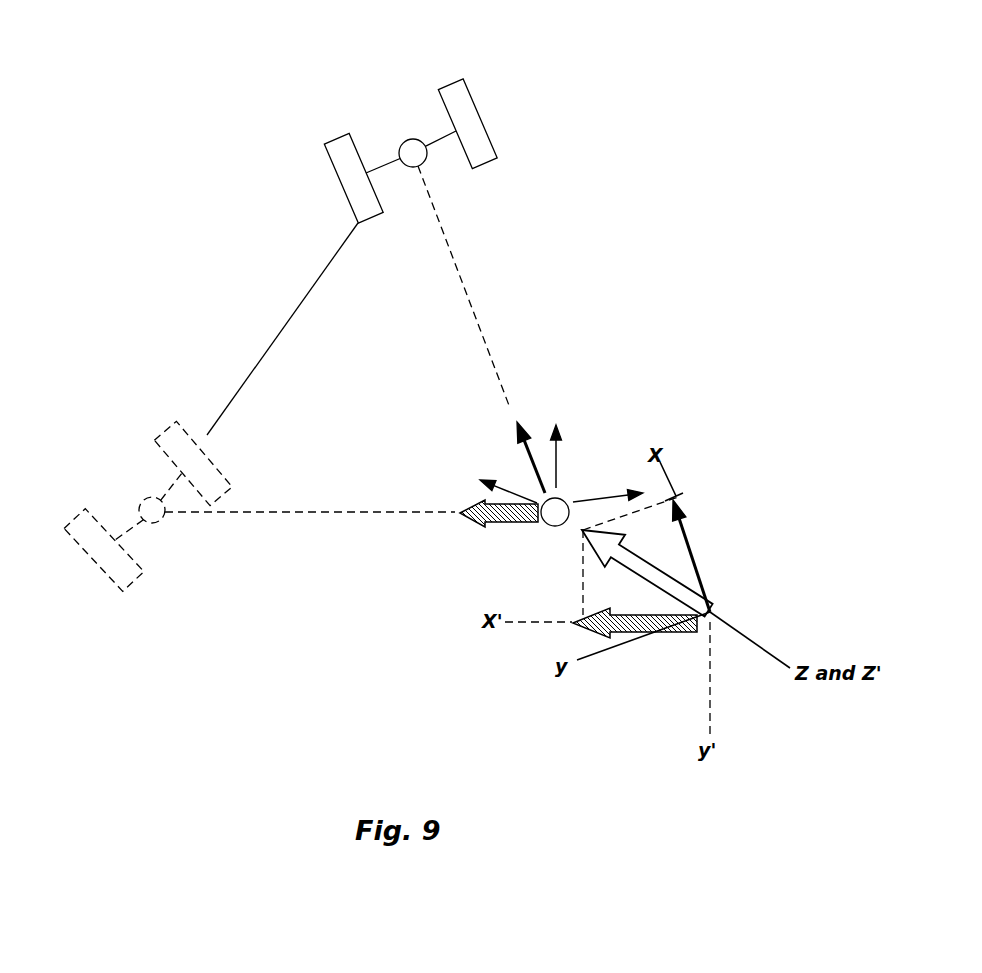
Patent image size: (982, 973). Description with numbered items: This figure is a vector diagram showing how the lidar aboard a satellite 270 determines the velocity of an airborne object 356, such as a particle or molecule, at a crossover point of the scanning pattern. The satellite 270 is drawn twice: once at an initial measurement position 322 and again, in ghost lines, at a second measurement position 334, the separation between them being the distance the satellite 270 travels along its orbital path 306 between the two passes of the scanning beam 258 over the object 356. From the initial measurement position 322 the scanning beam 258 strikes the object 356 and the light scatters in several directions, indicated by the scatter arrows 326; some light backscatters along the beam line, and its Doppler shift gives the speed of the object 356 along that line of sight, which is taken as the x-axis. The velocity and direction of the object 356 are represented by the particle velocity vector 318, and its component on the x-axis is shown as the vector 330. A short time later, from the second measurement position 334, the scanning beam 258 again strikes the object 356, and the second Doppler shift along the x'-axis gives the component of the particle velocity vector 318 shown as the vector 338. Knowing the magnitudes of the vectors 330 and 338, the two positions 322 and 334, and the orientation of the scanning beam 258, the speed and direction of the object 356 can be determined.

The initial measurement position 322 is at (398, 129).
The satellite 270 is at (475, 120).
The orbital path 306 is at (277, 333).
The second measurement position 334 is at (129, 483).
The scanning beam 258 is at (483, 262).
The object 356 is at (557, 508).
The vector 330 is at (528, 418).
The scatter arrows 326 is at (557, 456).
The vector 338 is at (503, 527).
The particle velocity vector 318 is at (653, 578).